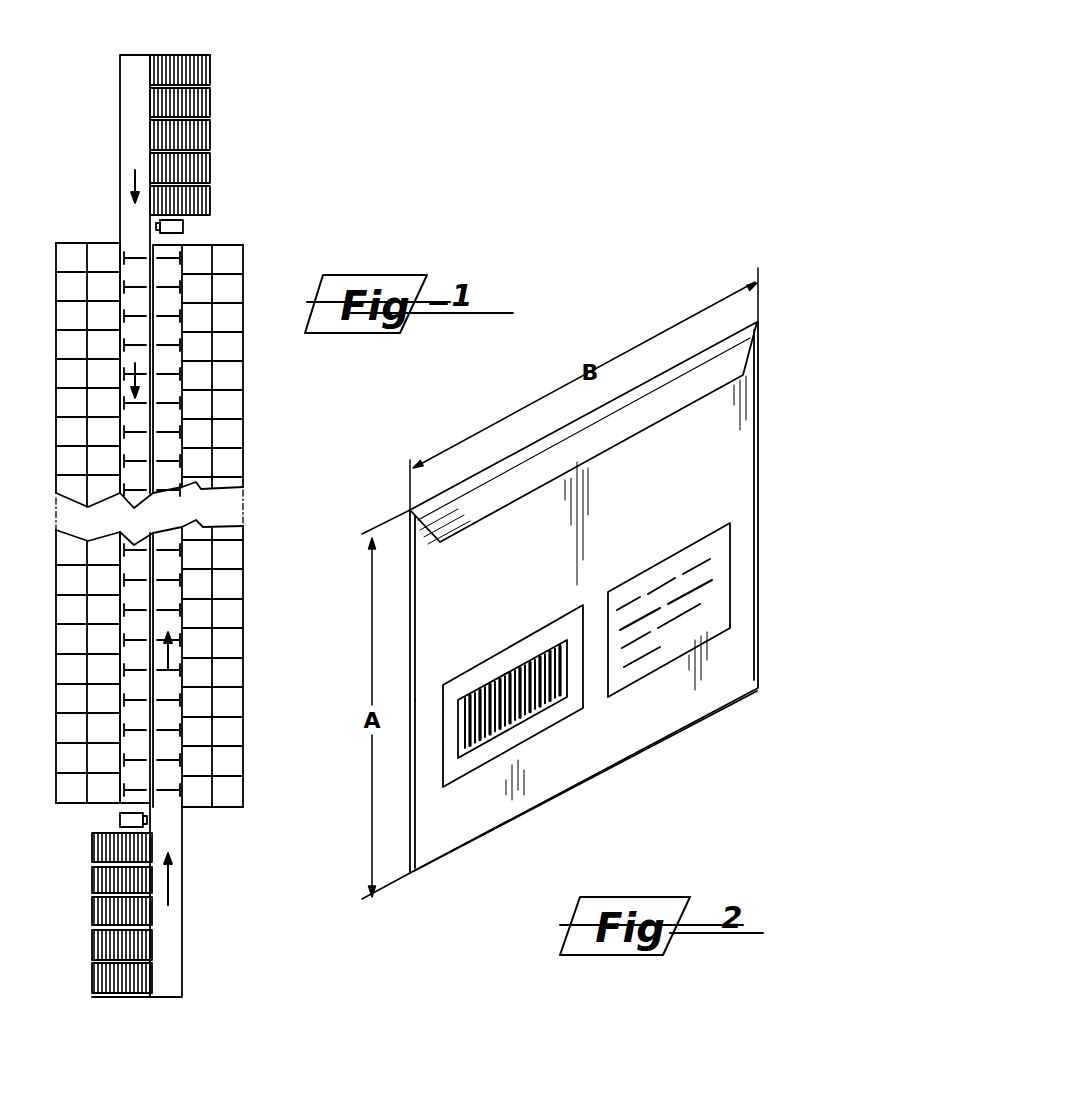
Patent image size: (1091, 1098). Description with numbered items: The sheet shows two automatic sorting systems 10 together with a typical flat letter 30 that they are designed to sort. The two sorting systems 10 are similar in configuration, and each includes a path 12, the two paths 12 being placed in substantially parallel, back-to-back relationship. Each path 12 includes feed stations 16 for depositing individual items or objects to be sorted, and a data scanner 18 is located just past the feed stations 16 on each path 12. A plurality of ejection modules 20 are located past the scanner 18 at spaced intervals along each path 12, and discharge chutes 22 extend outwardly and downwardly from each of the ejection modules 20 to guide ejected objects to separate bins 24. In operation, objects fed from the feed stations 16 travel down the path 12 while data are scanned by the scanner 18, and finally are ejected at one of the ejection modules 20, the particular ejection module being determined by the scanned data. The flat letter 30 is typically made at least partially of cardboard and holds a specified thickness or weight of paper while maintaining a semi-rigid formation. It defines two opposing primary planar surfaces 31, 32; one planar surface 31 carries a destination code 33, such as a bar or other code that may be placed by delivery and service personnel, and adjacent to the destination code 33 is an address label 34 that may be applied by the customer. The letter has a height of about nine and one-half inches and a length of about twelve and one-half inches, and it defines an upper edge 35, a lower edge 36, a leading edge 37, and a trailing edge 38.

In FIG. 1, the automatic sorting system 10 is at (268, 728).
In FIG. 1, the path 12 is at (135, 80).
In FIG. 1, the feed stations 16 is at (210, 105).
In FIG. 1, the data scanner 18 is at (183, 226).
In FIG. 1, the ejection modules 20 is at (135, 258).
In FIG. 1, the discharge chutes 22 is at (200, 290).
In FIG. 1, the bins 24 is at (60, 292).
In FIG. 2, the flat letter 30 is at (474, 406).
In FIG. 2, the primary planar surface 31 is at (696, 494).
In FIG. 2, the primary planar surface 32 is at (400, 630).
In FIG. 2, the destination code 33 is at (548, 715).
In FIG. 2, the address label 34 is at (630, 675).
In FIG. 2, the upper edge 35 is at (668, 362).
In FIG. 2, the lower edge 36 is at (462, 858).
In FIG. 2, the leading edge 37 is at (760, 437).
In FIG. 2, the trailing edge 38 is at (410, 772).